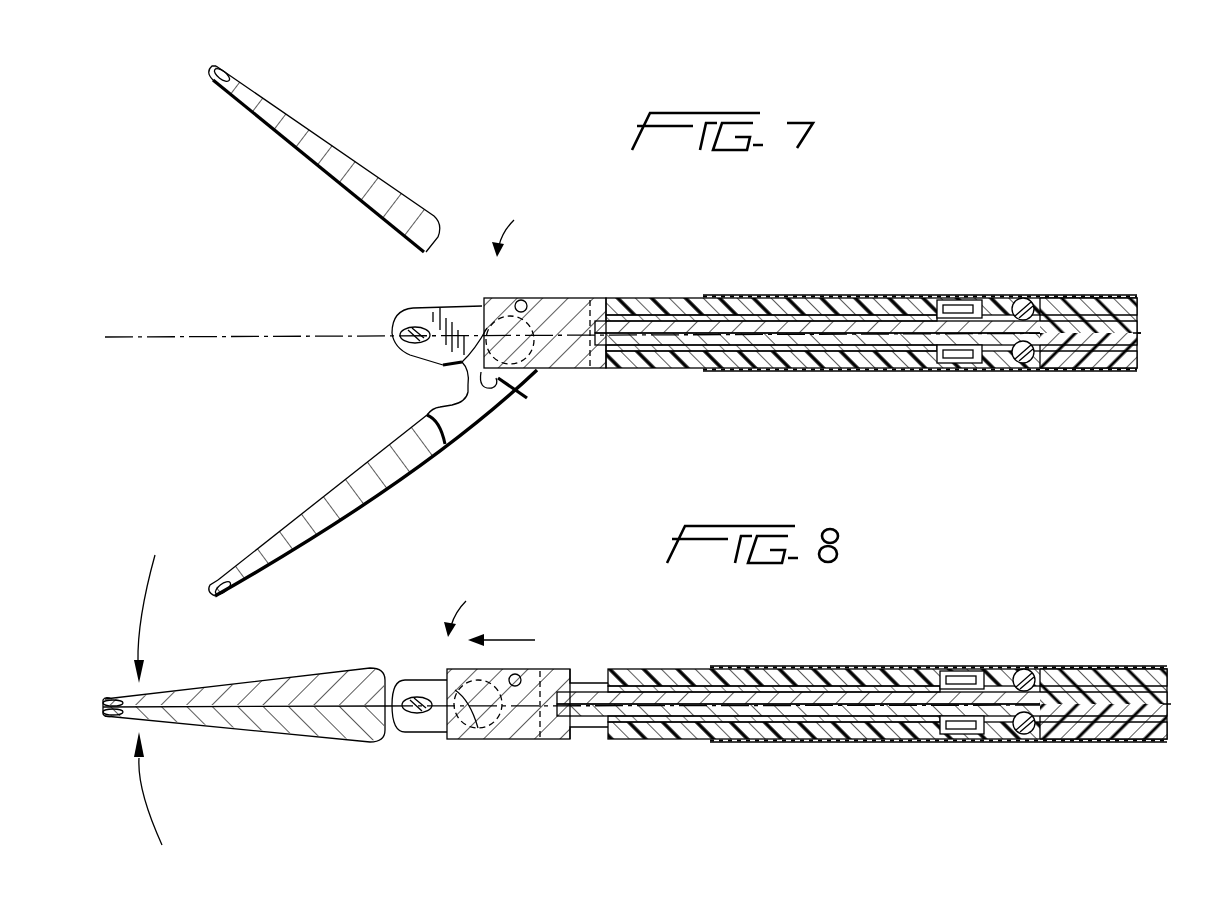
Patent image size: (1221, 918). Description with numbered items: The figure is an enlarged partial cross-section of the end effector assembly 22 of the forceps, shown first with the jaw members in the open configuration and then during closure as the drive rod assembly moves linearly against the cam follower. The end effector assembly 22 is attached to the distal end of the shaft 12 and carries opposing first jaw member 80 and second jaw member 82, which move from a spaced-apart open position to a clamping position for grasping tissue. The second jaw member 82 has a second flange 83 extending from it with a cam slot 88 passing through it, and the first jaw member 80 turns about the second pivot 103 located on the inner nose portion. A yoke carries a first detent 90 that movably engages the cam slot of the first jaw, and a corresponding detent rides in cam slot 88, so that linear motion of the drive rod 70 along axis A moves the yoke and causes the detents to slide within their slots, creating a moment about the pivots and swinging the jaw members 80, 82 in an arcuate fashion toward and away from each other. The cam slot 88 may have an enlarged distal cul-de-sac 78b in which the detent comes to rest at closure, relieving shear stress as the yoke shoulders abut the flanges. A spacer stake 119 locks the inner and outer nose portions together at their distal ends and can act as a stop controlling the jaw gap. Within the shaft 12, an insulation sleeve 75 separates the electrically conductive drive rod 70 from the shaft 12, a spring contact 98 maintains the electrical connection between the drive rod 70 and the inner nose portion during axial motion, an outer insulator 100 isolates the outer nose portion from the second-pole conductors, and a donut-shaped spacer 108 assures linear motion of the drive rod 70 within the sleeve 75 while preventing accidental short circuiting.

In FIG. 7, the shaft 12 is at (772, 298).
In FIG. 8, the shaft 12 is at (787, 668).
In FIG. 7, the end effector assembly 22 is at (522, 230).
In FIG. 8, the end effector assembly 22 is at (489, 615).
In FIG. 7, the drive rod 70 is at (680, 300).
In FIG. 8, the drive rod 70 is at (655, 700).
In FIG. 7, the insulation sleeve 75 is at (1118, 298).
In FIG. 8, the insulation sleeve 75 is at (1147, 670).
In FIG. 7, the cul-de-sac 78b is at (491, 390).
In FIG. 7, the first jaw member 80 is at (408, 200).
In FIG. 8, the first jaw member 80 is at (345, 680).
In FIG. 7, the second jaw member 82 is at (404, 466).
In FIG. 8, the second jaw member 82 is at (345, 740).
In FIG. 7, the second flange 83 is at (566, 300).
In FIG. 8, the second flange 83 is at (862, 704).
In FIG. 7, the cam slot 88 is at (514, 390).
In FIG. 7, the first detent 90 is at (536, 372).
In FIG. 8, the first detent 90 is at (480, 722).
In FIG. 7, the spring contact 98 is at (840, 300).
In FIG. 8, the spring contact 98 is at (875, 700).
In FIG. 7, the outer insulator 100 is at (955, 305).
In FIG. 8, the outer insulator 100 is at (960, 672).
In FIG. 7, the second pivot 103 is at (520, 302).
In FIG. 8, the second pivot 103 is at (518, 675).
In FIG. 7, the donut-shaped spacer 108 is at (1026, 300).
In FIG. 8, the donut-shaped spacer 108 is at (1028, 680).
In FIG. 7, the spacer stake 119 is at (412, 345).
In FIG. 8, the spacer stake 119 is at (418, 714).
In FIG. 7, the axis A is at (149, 337).